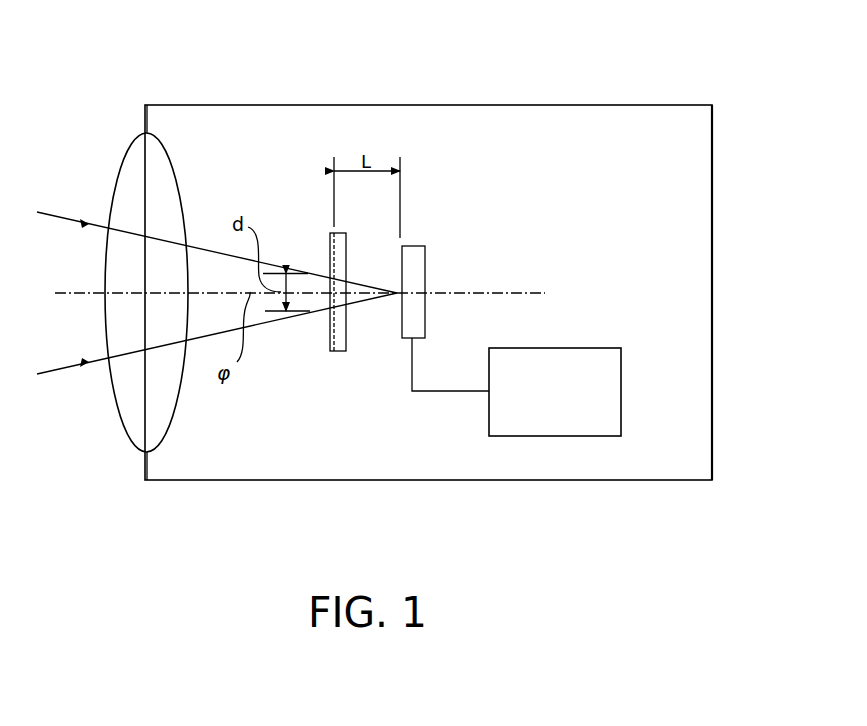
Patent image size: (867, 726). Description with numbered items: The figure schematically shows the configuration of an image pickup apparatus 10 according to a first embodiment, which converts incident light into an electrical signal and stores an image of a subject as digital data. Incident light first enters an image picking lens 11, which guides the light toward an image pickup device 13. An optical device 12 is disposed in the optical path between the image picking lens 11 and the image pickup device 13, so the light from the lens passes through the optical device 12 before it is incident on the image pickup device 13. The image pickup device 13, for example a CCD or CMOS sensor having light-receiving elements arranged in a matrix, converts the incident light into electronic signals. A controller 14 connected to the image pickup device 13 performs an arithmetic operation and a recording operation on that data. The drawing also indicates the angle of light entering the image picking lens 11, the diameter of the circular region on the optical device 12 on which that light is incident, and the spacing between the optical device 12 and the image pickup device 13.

The image pickup apparatus 10 is at (216, 70).
The image picking lens 11 is at (128, 168).
The optical device 12 is at (327, 227).
The image pickup device 13 is at (420, 261).
The controller 14 is at (600, 348).